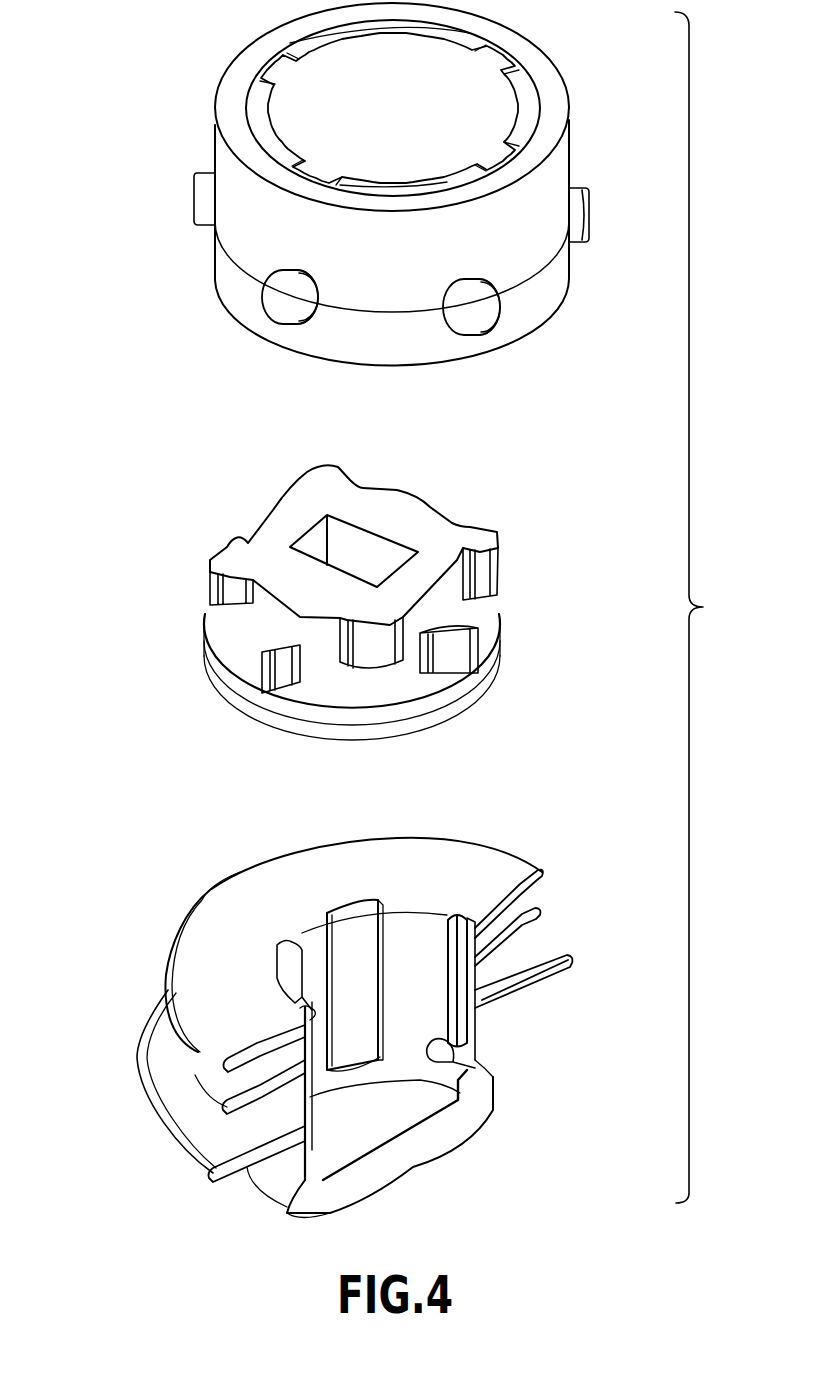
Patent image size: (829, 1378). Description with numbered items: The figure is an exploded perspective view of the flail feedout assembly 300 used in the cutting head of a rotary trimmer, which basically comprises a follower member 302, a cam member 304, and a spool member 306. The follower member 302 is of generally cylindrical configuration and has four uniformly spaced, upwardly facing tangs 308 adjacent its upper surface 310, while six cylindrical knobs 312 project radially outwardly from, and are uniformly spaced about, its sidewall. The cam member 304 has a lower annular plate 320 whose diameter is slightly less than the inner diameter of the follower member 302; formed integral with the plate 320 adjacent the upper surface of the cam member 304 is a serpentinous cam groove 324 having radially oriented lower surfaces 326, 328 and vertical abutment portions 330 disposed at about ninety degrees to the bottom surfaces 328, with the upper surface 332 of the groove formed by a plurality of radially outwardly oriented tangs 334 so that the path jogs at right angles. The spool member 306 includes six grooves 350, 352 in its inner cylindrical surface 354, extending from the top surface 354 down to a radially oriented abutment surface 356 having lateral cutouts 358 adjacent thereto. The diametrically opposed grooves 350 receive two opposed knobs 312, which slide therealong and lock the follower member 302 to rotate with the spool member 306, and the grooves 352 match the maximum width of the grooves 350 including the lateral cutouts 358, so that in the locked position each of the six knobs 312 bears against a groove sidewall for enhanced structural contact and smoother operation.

The flail feedout assembly 300 is at (718, 607).
The follower member 302 is at (370, 200).
The cam member 304 is at (323, 593).
The spool member 306 is at (298, 1016).
The tangs 308 is at (443, 97).
The upper surface 310 is at (550, 98).
The knobs 312 is at (282, 303).
The annular plate 320 is at (460, 697).
The cam groove 324 is at (257, 630).
The lower surface 326 is at (377, 697).
The lower surface 328 is at (247, 667).
The vertical abutment portions 330 is at (308, 678).
The upper surface 332 is at (500, 608).
The tangs 334 is at (373, 552).
The grooves 350 is at (465, 940).
The grooves 352 is at (282, 960).
The inner cylindrical surface 354 is at (372, 887).
The abutment surface 356 is at (352, 1072).
The lateral cutouts 358 is at (437, 1053).